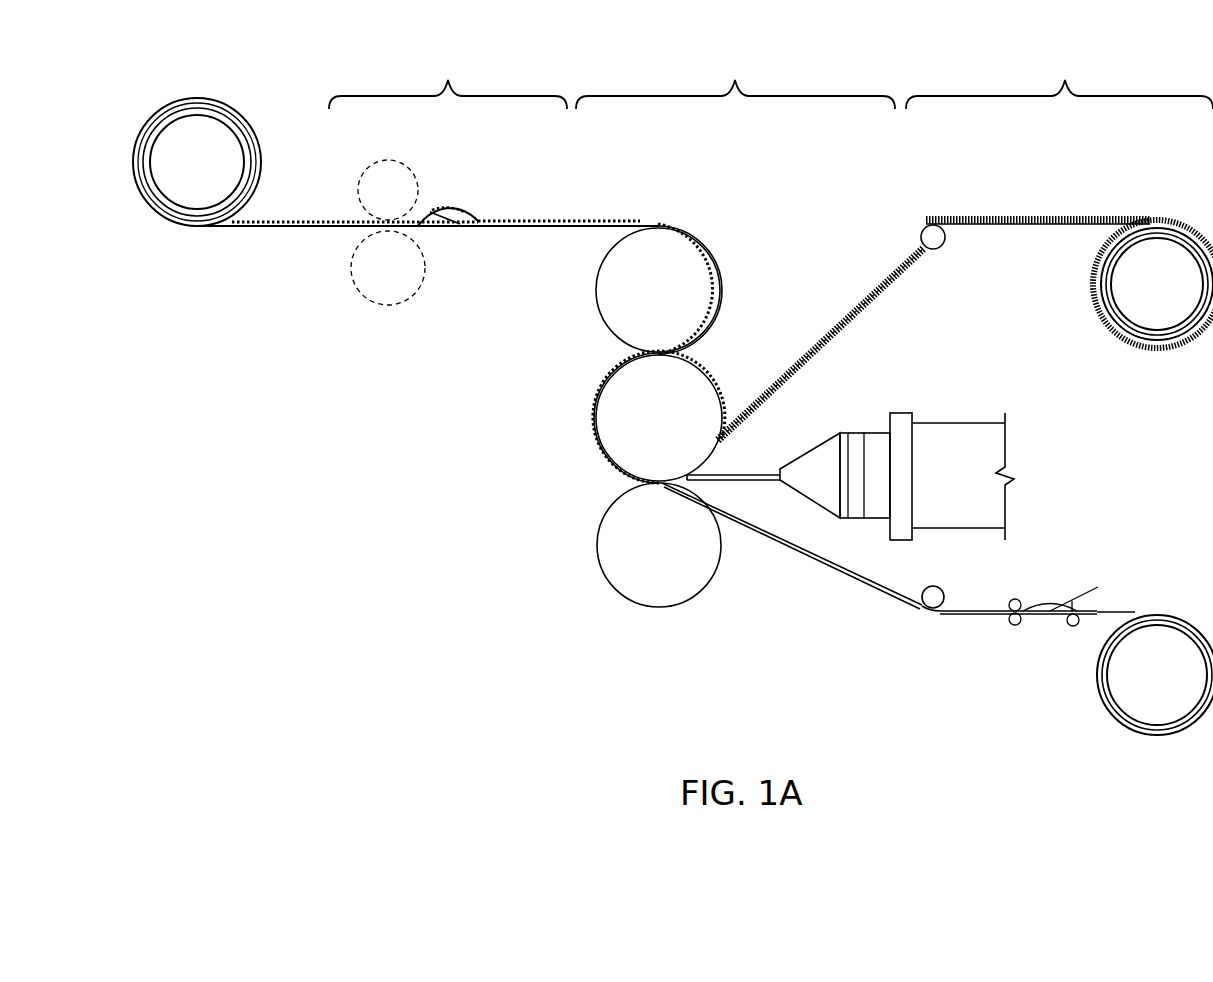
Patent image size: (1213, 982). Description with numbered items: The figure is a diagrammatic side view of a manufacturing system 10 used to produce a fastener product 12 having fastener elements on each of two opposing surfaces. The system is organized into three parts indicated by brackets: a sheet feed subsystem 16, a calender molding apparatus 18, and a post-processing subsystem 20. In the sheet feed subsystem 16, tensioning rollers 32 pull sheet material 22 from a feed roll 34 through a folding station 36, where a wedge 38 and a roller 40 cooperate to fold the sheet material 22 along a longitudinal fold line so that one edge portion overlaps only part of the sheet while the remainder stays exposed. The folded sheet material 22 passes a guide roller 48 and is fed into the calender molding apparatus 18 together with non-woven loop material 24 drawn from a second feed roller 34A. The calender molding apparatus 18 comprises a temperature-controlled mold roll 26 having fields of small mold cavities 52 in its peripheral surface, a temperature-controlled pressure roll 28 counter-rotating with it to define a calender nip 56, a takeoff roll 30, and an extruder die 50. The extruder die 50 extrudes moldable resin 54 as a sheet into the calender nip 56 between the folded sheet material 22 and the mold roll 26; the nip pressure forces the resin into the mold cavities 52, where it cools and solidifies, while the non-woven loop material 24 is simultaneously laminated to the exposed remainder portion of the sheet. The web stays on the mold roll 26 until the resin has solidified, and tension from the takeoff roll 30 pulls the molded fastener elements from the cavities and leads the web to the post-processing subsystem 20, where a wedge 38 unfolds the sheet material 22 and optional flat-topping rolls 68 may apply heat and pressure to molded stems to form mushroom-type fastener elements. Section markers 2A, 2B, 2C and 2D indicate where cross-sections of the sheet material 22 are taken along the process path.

The manufacturing system 10 is at (953, 52).
The fastener product 12 is at (197, 227).
The sheet feed subsystem 16 is at (1059, 81).
The calender molding apparatus 18 is at (735, 81).
The post-processing subsystem 20 is at (448, 81).
The sheet material 22 is at (1137, 612).
The non-woven loop material 24 is at (1060, 216).
The mold roll 26 is at (659, 418).
The pressure roll 28 is at (659, 545).
The takeoff roll 30 is at (658, 290).
The tensioning rollers 32 is at (1018, 598).
The feed roll 34 is at (1155, 675).
The second feed roller 34A is at (1153, 284).
The folding station 36 is at (1073, 568).
The wedge 38 is at (438, 229).
The roller 40 is at (1066, 624).
The guide roller 48 is at (938, 586).
The extruder die 50 is at (880, 432).
The mold cavities 52 is at (717, 393).
The moldable resin 54 is at (726, 484).
The calender nip 56 is at (699, 469).
The flat-topping rolls 68 is at (393, 168).
The section 2A is at (1097, 643).
The section 2B is at (1002, 641).
The section 2C is at (538, 255).
The section 2D is at (329, 255).